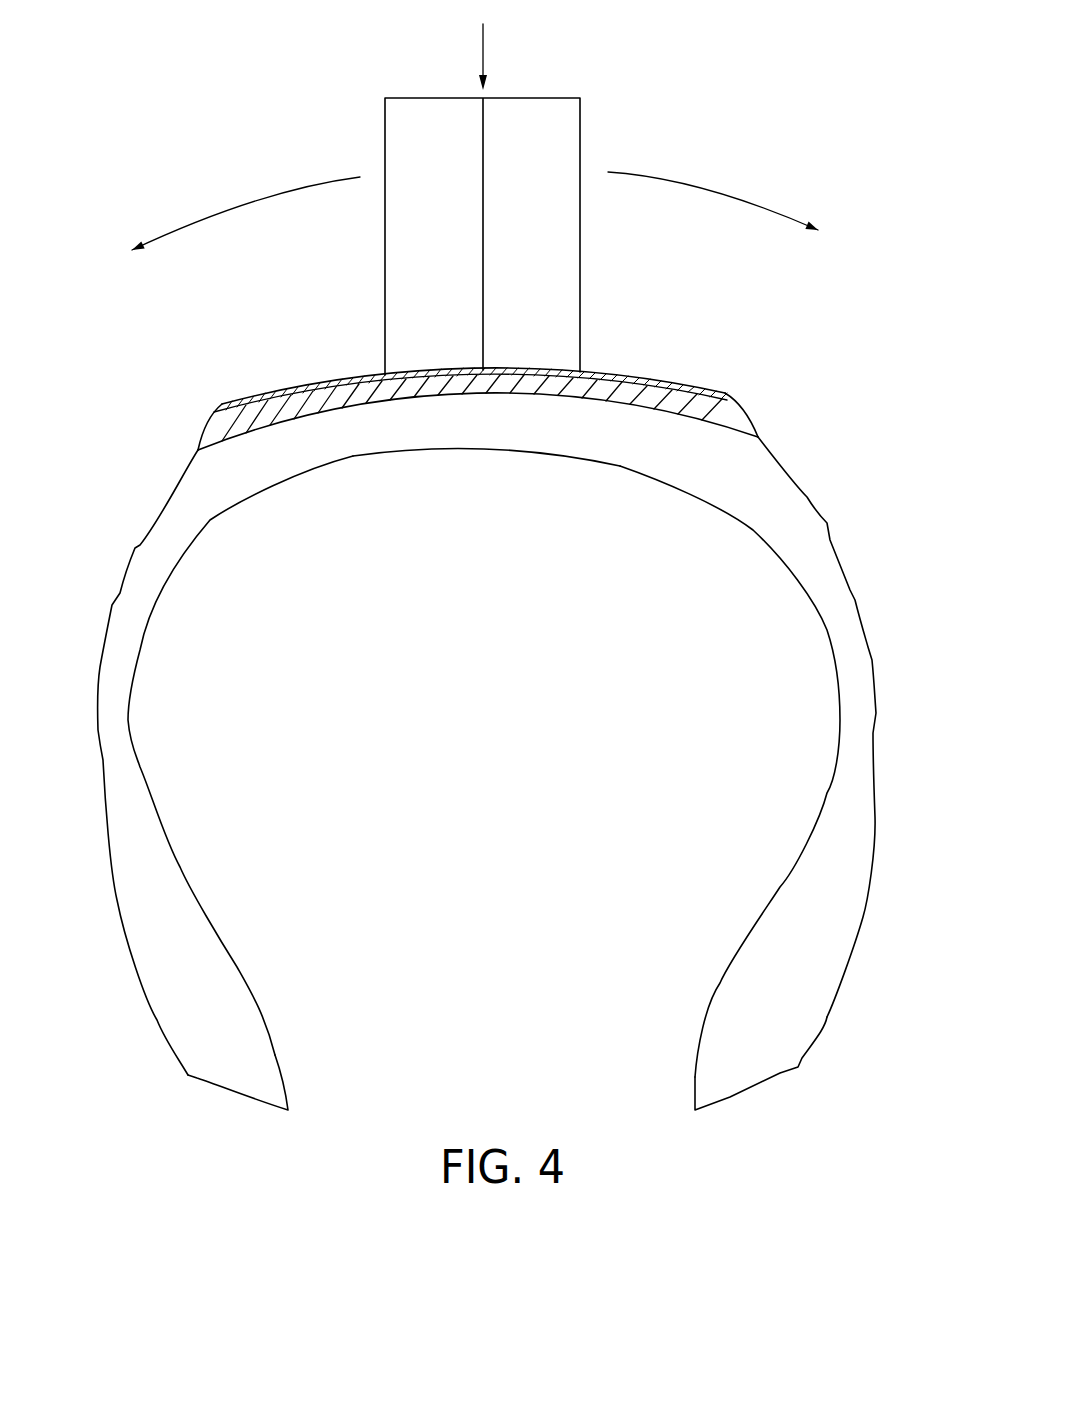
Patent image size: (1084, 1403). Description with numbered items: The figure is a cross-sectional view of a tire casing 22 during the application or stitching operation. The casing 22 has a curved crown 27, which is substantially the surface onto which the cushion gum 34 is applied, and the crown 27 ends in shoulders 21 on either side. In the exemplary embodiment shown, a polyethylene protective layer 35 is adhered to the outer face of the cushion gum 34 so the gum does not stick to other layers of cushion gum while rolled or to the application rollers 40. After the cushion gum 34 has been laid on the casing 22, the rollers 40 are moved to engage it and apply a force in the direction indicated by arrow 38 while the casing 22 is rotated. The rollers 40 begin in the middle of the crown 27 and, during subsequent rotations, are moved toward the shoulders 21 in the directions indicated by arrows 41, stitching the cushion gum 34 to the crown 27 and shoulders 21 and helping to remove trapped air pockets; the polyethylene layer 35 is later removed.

The shoulders 21 is at (152, 572).
The casing 22 is at (782, 1000).
The crown 27 is at (353, 453).
The cushion gum 34 is at (750, 420).
The polyethylene protective layer 35 is at (680, 380).
The arrow 38 is at (483, 44).
The rollers 40 is at (412, 130).
The arrows 41 is at (250, 203).